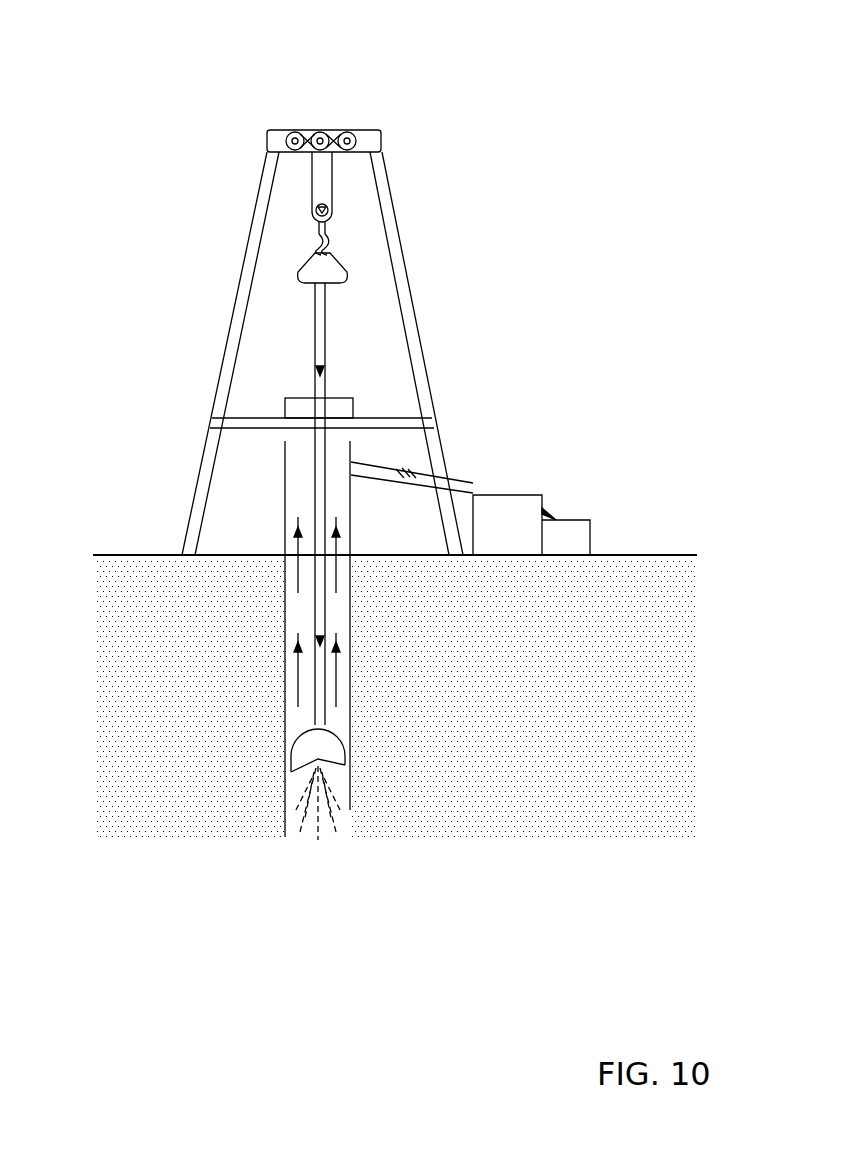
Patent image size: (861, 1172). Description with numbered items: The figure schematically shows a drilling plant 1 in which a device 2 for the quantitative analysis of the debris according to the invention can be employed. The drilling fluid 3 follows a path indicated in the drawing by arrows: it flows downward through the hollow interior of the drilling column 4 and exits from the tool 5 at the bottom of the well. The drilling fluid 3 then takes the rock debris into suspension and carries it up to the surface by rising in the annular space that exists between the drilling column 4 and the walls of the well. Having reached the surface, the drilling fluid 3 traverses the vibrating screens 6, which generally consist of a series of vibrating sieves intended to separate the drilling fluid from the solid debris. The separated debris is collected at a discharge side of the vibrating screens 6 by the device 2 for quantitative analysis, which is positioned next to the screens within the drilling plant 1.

The drilling plant 1 is at (220, 160).
The device for the quantitative analysis of the debris 2 is at (567, 535).
The drilling fluid 3 is at (322, 795).
The drilling column 4 is at (298, 497).
The tool 5 is at (292, 770).
The vibrating screens 6 is at (510, 518).